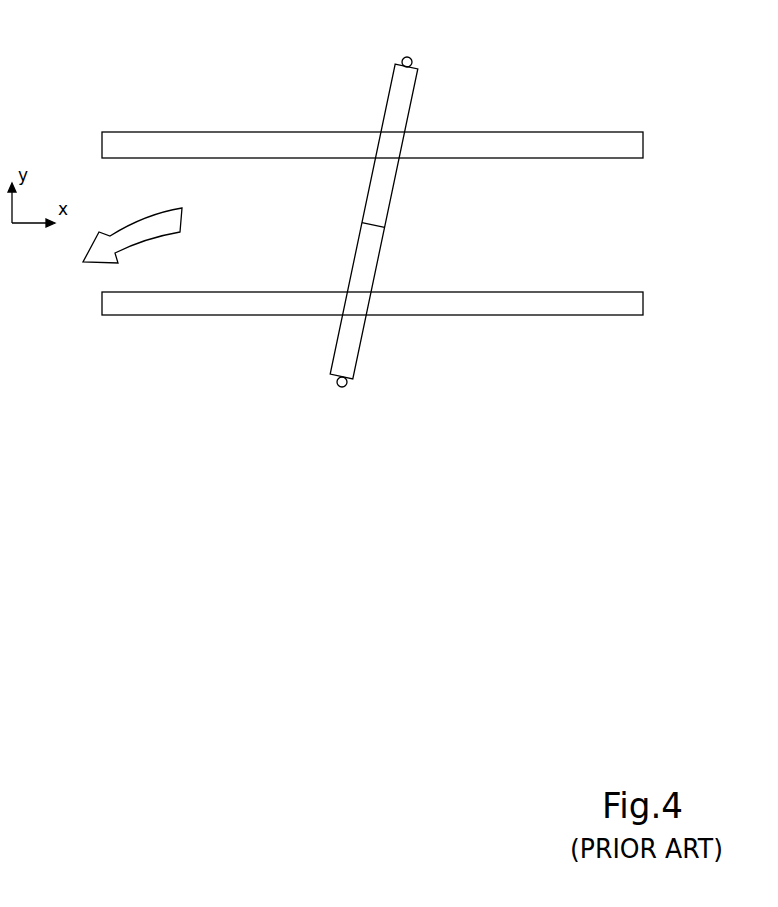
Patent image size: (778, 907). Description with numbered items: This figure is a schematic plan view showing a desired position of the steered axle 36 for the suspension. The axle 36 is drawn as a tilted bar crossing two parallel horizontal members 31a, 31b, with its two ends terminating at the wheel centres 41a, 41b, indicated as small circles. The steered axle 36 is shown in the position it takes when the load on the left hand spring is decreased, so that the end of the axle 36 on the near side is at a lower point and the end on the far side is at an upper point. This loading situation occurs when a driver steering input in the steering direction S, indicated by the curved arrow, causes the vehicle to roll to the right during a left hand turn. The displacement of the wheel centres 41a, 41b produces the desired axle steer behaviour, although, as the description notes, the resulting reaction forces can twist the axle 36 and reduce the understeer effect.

The steering direction S is at (147, 225).
The first guide bar 31a is at (582, 143).
The second guide bar 31b is at (590, 303).
The steered axle 36 is at (348, 338).
The wheel centre 41a is at (337, 386).
The wheel centre 41b is at (411, 59).